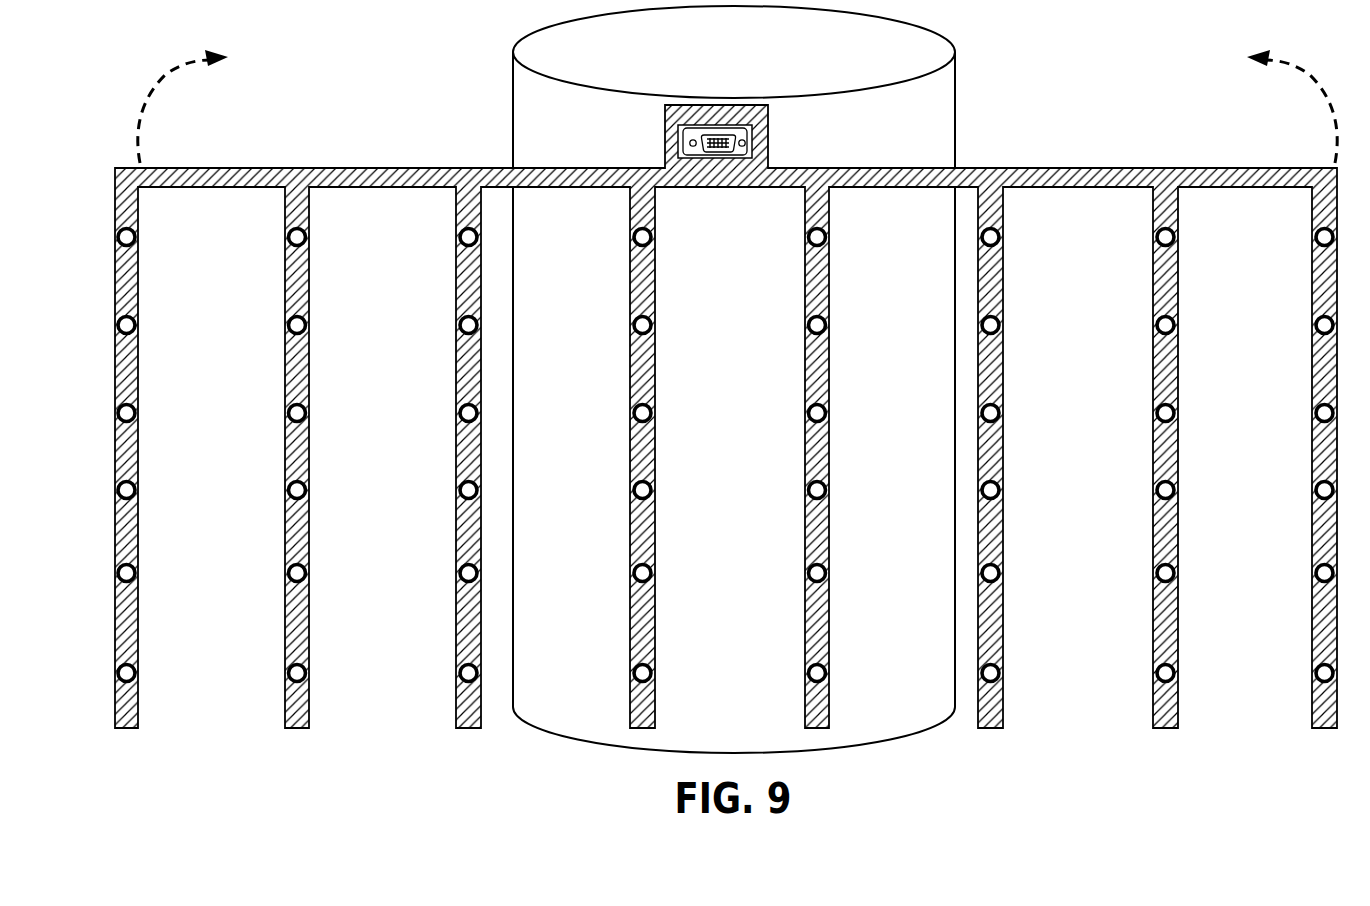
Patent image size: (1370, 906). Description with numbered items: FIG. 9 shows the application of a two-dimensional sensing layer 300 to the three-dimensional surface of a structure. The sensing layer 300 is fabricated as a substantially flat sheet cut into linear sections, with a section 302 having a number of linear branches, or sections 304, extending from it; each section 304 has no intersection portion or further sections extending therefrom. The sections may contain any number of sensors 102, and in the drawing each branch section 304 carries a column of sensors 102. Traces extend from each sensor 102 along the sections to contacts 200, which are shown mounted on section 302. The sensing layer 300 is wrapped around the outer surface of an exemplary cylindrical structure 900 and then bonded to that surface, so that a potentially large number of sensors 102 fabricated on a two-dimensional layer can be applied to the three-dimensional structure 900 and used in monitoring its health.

The cylindrical structure 900 is at (945, 38).
The contacts 200 is at (722, 105).
The sensing layer 300 is at (726, 383).
The section 302 is at (347, 167).
The section 304 is at (140, 300).
The sensor 102 is at (140, 673).